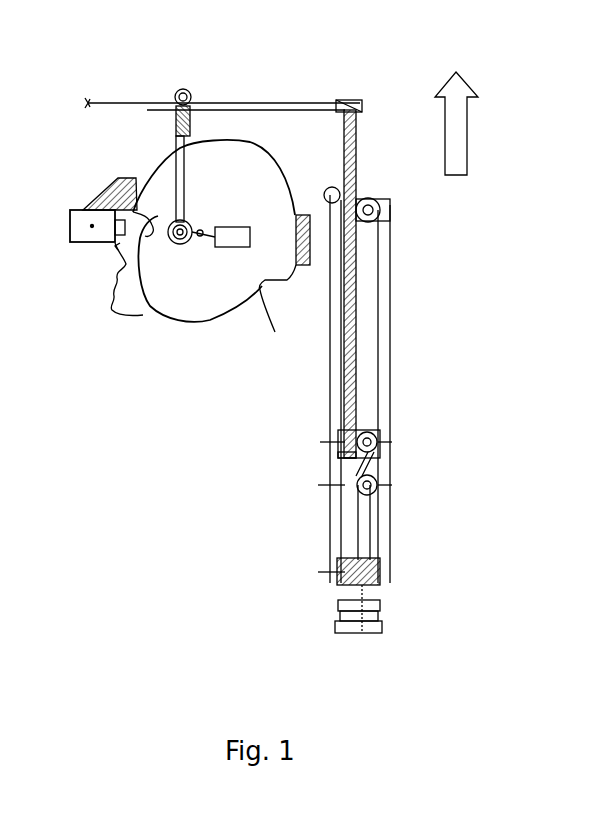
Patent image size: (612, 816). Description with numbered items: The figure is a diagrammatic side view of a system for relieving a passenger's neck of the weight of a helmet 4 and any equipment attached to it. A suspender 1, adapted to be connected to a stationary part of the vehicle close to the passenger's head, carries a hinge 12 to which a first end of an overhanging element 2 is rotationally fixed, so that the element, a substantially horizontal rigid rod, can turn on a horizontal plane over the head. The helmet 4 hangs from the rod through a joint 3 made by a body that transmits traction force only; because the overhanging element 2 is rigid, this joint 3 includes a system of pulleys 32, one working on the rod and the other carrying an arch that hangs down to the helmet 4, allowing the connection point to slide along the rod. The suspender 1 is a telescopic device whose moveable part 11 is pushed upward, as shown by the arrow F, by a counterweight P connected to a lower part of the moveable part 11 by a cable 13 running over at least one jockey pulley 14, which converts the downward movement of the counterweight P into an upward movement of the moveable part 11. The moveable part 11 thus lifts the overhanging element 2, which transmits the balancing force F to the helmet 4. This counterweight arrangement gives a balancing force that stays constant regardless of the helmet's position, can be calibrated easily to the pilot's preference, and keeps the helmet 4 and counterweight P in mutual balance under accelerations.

The suspender 1 is at (398, 340).
The overhanging element 2 is at (235, 96).
The joint 3 is at (192, 150).
The helmet 4 is at (195, 278).
The moveable part 11 is at (360, 135).
The hinge 12 is at (362, 98).
The cable 13 is at (368, 508).
The jockey pulley 14 is at (390, 208).
The system of pulleys 32 is at (190, 86).
The counterweight P is at (383, 572).
The balancing force arrow F is at (465, 123).